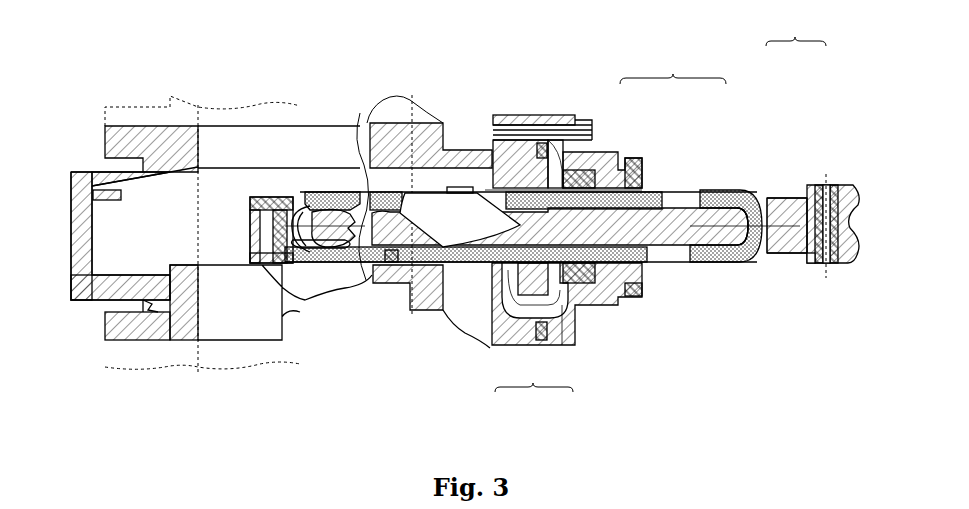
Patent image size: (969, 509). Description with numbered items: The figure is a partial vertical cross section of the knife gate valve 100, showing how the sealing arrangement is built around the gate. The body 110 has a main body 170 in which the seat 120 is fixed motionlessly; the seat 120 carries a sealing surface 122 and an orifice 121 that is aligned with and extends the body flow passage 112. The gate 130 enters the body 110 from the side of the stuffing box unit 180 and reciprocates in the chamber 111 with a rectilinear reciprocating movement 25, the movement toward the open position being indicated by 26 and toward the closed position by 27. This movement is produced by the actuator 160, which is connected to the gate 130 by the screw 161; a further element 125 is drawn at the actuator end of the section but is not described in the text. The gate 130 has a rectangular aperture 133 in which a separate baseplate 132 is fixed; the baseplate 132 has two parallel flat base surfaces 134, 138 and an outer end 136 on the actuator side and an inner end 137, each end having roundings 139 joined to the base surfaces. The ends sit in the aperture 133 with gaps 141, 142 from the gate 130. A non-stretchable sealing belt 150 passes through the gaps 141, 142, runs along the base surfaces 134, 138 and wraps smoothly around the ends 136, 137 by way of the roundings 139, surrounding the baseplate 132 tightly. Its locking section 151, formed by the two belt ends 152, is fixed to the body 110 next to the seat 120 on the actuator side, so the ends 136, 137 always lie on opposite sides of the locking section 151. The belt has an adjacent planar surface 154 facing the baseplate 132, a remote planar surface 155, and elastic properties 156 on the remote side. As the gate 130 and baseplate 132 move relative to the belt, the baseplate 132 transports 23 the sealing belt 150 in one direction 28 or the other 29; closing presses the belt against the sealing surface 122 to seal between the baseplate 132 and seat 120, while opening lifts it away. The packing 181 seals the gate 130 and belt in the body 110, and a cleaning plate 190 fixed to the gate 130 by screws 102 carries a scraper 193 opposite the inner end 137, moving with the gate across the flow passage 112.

The knife gate valve 100 is at (464, 25).
The screws 102 is at (292, 215).
The body 110 is at (533, 391).
The chamber 111 is at (131, 241).
The flow passage 112 is at (216, 155).
The seat 120 is at (170, 340).
The orifice 121 is at (233, 318).
The sealing surface 122 is at (188, 240).
The end fitting 125 is at (805, 174).
The gate 130 is at (790, 198).
The baseplate 132 is at (717, 249).
The aperture 133 is at (438, 231).
The base surface 134 is at (680, 247).
The outer end 136 is at (798, 198).
The inner end 137 is at (290, 272).
The base surface 138 is at (670, 192).
The roundings 139 is at (745, 262).
The gap 141 is at (310, 192).
The gap 142 is at (766, 255).
The sealing belt 150 is at (505, 290).
The locking section 151 is at (570, 327).
The belt ends 152 is at (465, 188).
The adjacent planar surface 154 is at (440, 160).
The remote planar surface 155 is at (340, 262).
The elastic properties 156 is at (397, 282).
The actuator 160 is at (836, 263).
The screw 161 is at (822, 265).
The main body 170 is at (505, 347).
The stuffing box unit 180 is at (565, 350).
The packing 181 is at (550, 186).
The cleaning plate 190 is at (290, 192).
The scraper 193 is at (298, 207).
The transport 23 is at (673, 66).
The rectilinear reciprocating movement 25 is at (796, 32).
The movement to the open position 26 is at (770, 196).
The movement to the closed position 27 is at (718, 196).
The transport direction 28 is at (675, 192).
The transport direction 29 is at (726, 106).